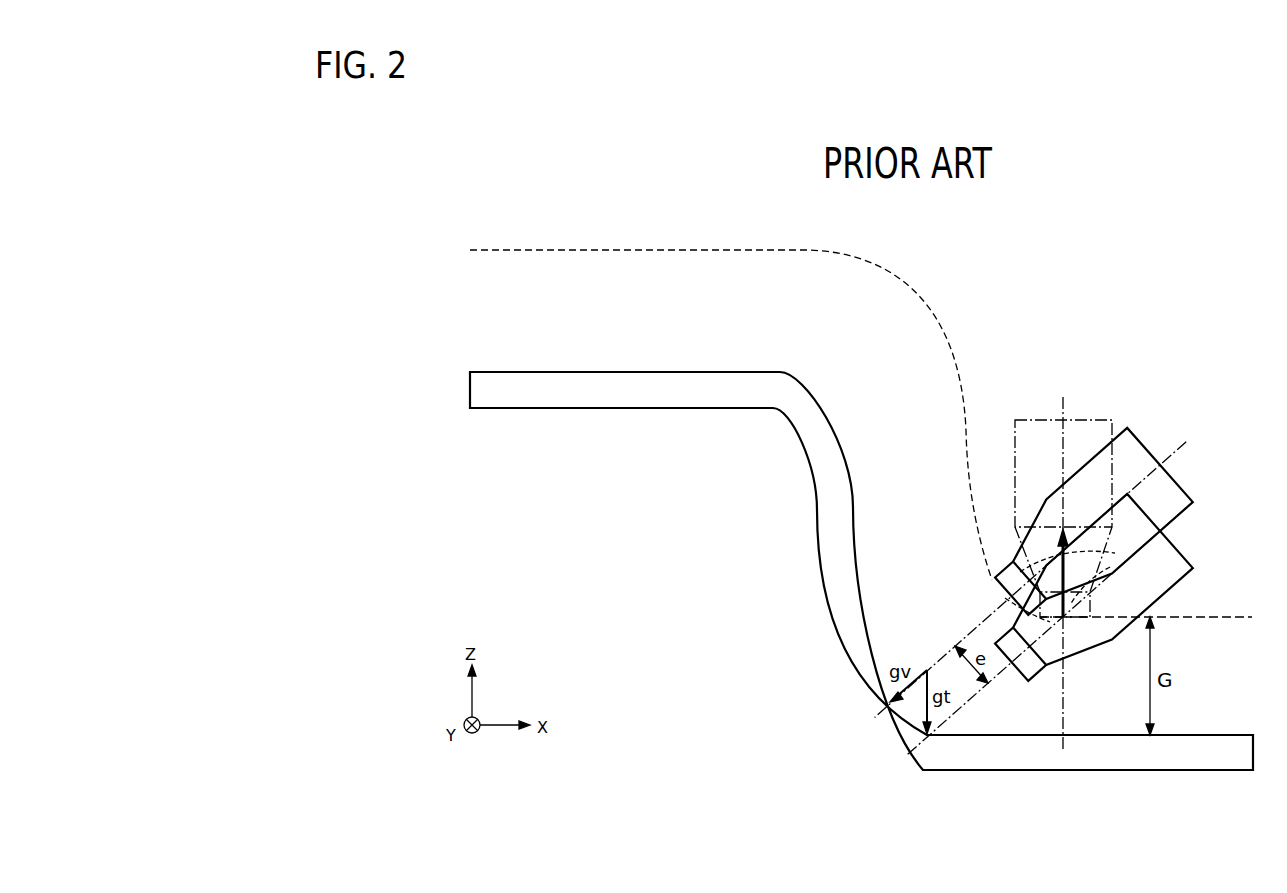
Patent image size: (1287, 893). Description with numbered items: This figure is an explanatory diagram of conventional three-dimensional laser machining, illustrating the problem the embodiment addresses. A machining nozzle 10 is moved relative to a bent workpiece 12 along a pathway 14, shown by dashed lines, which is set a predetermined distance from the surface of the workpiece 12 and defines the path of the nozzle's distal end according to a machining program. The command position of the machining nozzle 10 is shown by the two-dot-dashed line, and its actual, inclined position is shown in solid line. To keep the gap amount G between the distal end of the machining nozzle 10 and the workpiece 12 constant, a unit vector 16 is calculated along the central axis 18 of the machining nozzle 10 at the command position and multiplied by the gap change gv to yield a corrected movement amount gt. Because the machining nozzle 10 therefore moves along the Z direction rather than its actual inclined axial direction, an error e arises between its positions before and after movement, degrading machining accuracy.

The machining nozzle 10 is at (1098, 417).
The workpiece 12 is at (607, 388).
The pathway 14 is at (665, 250).
The unit vector 16 is at (1067, 562).
The central axis 18 is at (1063, 408).